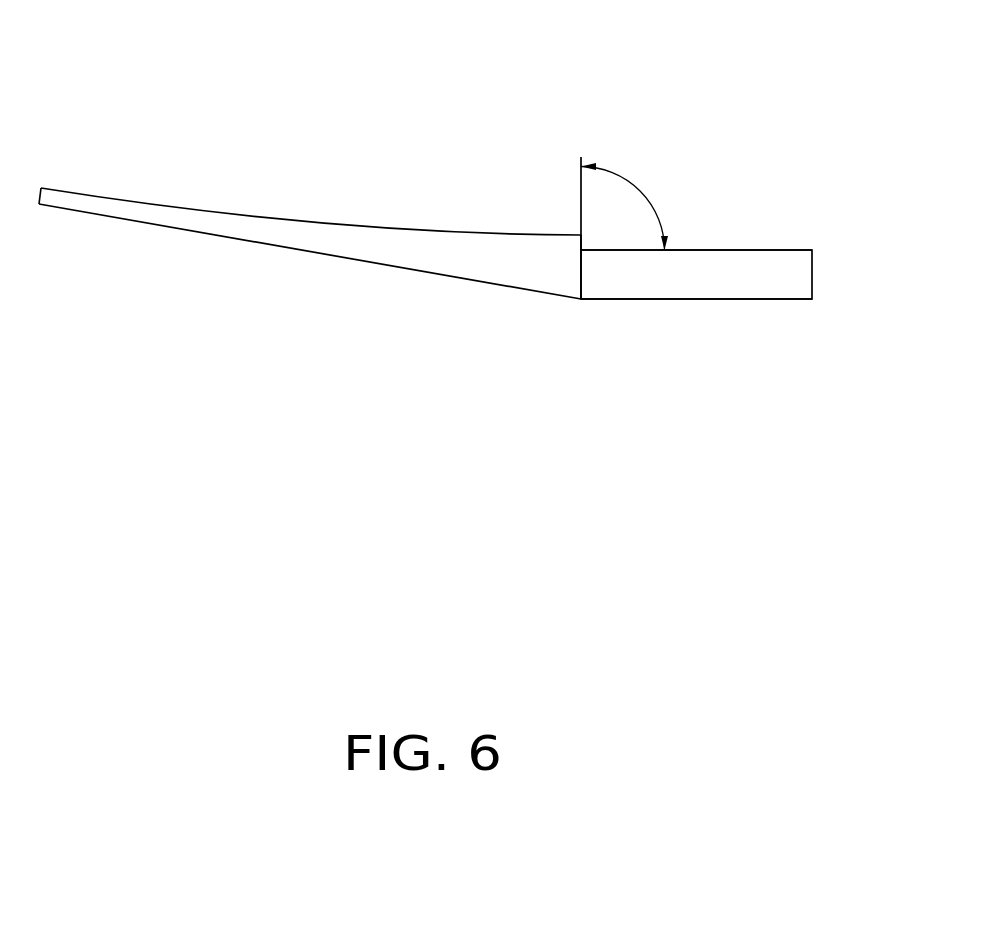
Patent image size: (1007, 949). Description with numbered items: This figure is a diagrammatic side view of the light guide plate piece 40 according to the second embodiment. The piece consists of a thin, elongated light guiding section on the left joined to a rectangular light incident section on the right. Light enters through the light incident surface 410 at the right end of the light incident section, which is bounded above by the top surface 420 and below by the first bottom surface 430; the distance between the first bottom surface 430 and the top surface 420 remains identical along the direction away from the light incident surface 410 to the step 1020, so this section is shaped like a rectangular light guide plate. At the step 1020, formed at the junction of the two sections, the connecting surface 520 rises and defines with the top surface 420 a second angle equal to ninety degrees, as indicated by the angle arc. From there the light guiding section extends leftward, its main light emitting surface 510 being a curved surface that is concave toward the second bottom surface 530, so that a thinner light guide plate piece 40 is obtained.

The light guide plate piece 40 is at (423, 65).
The light incident surface 410 is at (813, 268).
The top surface 420 is at (735, 250).
The first bottom surface 430 is at (712, 300).
The main light emitting surface 510 is at (395, 230).
The connecting surface 520 is at (580, 240).
The second bottom surface 530 is at (510, 287).
The step 1020 is at (583, 240).